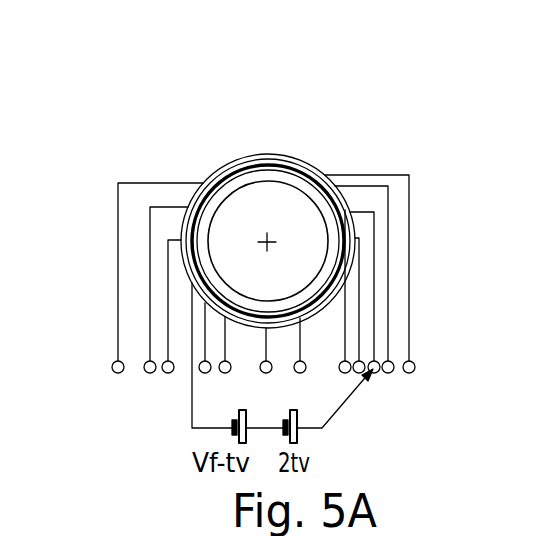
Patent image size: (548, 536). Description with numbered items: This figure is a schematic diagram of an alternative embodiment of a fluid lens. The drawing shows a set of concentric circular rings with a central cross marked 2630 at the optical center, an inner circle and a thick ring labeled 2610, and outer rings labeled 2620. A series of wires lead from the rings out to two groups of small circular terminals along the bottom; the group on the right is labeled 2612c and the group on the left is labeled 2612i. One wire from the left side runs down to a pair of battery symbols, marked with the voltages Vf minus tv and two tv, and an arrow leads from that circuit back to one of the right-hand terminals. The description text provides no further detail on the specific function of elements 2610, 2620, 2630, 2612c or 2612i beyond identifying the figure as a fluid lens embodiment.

The lens 2610 is at (246, 183).
The lens holder ring 2620 is at (270, 156).
The optical center 2630 is at (288, 207).
The electrodes (right side) 2612c is at (340, 189).
The electrodes (left side) 2612i is at (185, 250).